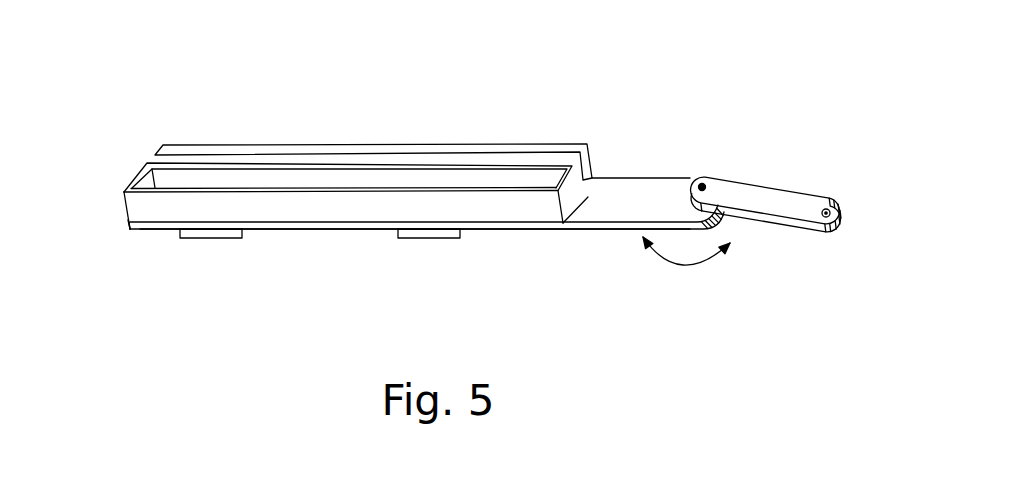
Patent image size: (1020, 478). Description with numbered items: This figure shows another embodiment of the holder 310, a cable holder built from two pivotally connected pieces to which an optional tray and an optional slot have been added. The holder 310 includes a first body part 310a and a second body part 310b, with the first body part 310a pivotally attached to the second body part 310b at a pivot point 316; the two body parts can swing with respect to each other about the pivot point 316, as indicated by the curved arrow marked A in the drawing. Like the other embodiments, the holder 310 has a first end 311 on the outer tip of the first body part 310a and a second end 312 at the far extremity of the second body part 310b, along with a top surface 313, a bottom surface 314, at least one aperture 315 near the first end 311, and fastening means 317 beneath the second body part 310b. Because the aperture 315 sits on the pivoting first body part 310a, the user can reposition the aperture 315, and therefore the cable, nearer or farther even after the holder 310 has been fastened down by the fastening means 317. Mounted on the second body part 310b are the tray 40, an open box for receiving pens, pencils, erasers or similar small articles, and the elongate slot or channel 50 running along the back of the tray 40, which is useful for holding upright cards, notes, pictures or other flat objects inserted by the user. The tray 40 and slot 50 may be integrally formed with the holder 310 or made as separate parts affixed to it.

The holder 310 is at (649, 142).
The first body part 310a is at (777, 198).
The second body part 310b is at (670, 190).
The first end 311 is at (837, 240).
The second end 312 is at (128, 227).
The top surface 313 is at (620, 192).
The bottom surface 314 is at (314, 229).
The aperture 315 is at (829, 210).
The pivot point 316 is at (706, 185).
The fastening means 317 is at (212, 238).
The tray 40 is at (213, 173).
The slot 50 is at (383, 158).